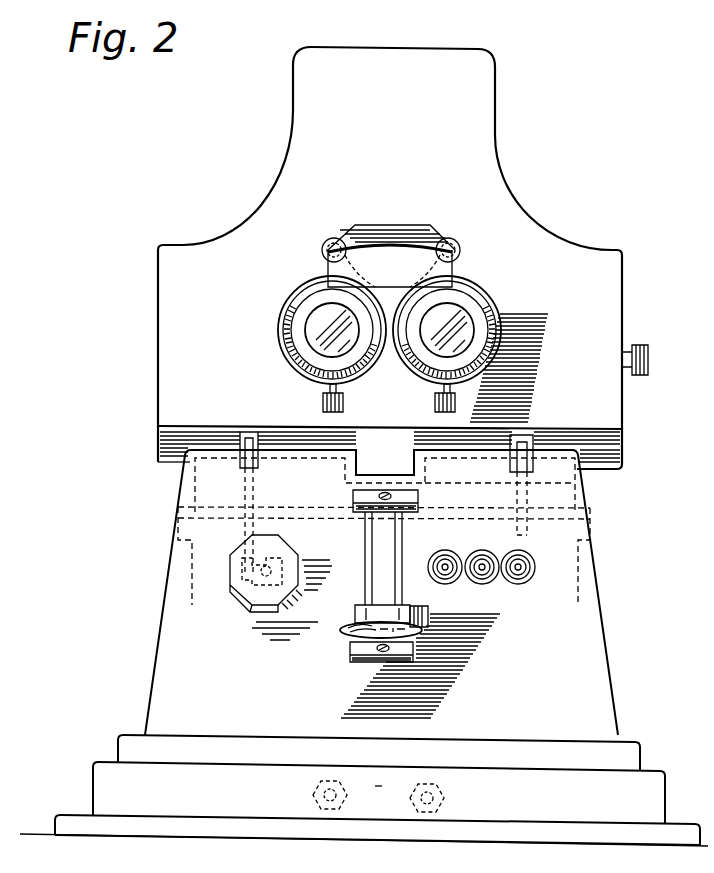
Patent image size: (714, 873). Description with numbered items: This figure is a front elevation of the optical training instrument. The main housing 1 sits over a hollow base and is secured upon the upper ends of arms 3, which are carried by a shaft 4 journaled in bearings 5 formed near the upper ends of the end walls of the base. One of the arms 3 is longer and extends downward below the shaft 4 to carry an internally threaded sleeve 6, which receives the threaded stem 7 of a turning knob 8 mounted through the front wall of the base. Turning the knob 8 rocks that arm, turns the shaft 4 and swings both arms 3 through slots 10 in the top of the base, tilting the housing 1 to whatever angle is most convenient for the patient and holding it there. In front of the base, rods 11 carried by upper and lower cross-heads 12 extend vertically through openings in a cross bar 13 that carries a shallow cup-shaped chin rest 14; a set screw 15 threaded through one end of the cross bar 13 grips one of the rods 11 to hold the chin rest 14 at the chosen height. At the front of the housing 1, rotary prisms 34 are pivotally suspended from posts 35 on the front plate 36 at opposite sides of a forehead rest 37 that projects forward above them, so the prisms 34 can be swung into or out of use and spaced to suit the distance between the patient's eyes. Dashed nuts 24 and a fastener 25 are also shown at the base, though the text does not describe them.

The apparatus 1 is at (495, 187).
The housing 36 is at (520, 232).
The bridge 37 is at (396, 248).
The eyepiece rings 35 is at (455, 250).
The eyepiece dials 34 is at (406, 355).
The pins 10 is at (243, 452).
The plate 3 is at (252, 506).
The base plate 5 is at (190, 528).
The slide 4 is at (460, 513).
The blocks 12 is at (353, 497).
The column 11 is at (375, 563).
The collar 13 is at (360, 605).
The thumb screw 15 is at (429, 613).
The disc 14 is at (362, 631).
The octagonal block 8 is at (248, 601).
The holder 7 is at (278, 566).
The aperture 6 is at (286, 573).
The nuts 24 is at (312, 795).
The bolt 25 is at (409, 798).